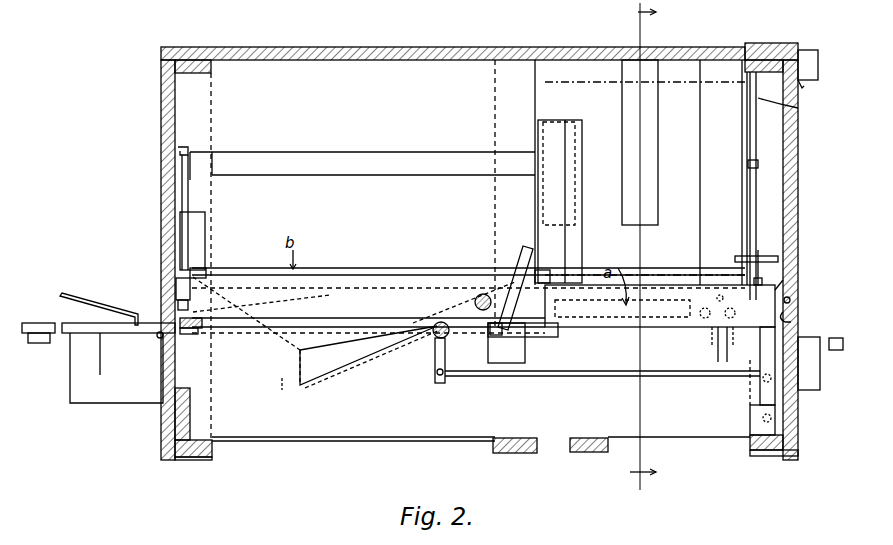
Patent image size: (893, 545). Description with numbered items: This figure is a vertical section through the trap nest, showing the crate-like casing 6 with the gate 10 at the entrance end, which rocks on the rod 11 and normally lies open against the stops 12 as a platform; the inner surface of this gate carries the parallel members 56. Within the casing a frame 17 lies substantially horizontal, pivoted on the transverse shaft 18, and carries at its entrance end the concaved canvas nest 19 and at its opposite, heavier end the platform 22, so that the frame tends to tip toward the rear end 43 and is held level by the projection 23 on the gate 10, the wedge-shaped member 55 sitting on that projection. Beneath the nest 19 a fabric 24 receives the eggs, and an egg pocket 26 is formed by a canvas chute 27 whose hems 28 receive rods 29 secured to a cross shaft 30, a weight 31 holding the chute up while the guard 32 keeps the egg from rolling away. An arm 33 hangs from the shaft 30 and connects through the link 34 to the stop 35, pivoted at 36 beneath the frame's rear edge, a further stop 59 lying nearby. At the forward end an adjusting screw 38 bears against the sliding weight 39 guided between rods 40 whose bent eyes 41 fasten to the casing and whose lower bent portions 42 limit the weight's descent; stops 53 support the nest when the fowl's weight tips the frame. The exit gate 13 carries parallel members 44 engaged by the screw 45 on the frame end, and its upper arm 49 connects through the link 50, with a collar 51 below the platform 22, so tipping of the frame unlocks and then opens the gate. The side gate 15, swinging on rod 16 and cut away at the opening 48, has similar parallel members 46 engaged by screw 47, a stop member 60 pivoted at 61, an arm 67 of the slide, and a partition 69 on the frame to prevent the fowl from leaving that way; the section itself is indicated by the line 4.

The section line 4- 4 is at (633, 248).
The casing 6 is at (352, 48).
The gate 10 is at (42, 322).
The rod 11 is at (108, 340).
The stops 12 is at (80, 345).
The gate 13 is at (800, 145).
The gate 15 is at (705, 166).
The rod 16 is at (688, 47).
The frame 17 is at (345, 298).
The shaft 18 is at (483, 292).
The nest 19 is at (318, 300).
The platform 22 is at (668, 285).
The projection 23 is at (192, 337).
The fabric 24 is at (338, 443).
The egg pocket 26 is at (333, 365).
The chute 27 is at (362, 360).
The hems 28 is at (378, 326).
The rods 29 is at (255, 328).
The cross shaft 30 is at (446, 336).
The weight 31 is at (516, 350).
The guard 32 is at (280, 386).
The arm 33 is at (434, 373).
The rod or link 34 is at (481, 378).
The stop 35 is at (786, 360).
The pivot 36 is at (758, 425).
The adjusting screw 38 is at (203, 270).
The weight 39 is at (205, 228).
The guide rods 40 is at (200, 168).
The eyes 41 is at (179, 147).
The bent portions 42 is at (178, 290).
The rear end 43 is at (793, 285).
The parallel members 44 is at (791, 300).
The screw 45 is at (792, 318).
The parallel members 46 is at (716, 340).
The screw 47 is at (718, 292).
The opening 48 is at (648, 250).
The arm 49 is at (780, 46).
The link 50 is at (798, 108).
The collar 51 is at (728, 380).
The stops 53 is at (158, 338).
The inclined or wedge-shaped member 55 is at (354, 331).
The parallel members 56 is at (90, 304).
The stop 59 is at (765, 392).
The stop member 60 is at (752, 207).
The pivot 61 is at (752, 164).
The arm 67 is at (742, 257).
The partition 69 is at (582, 234).